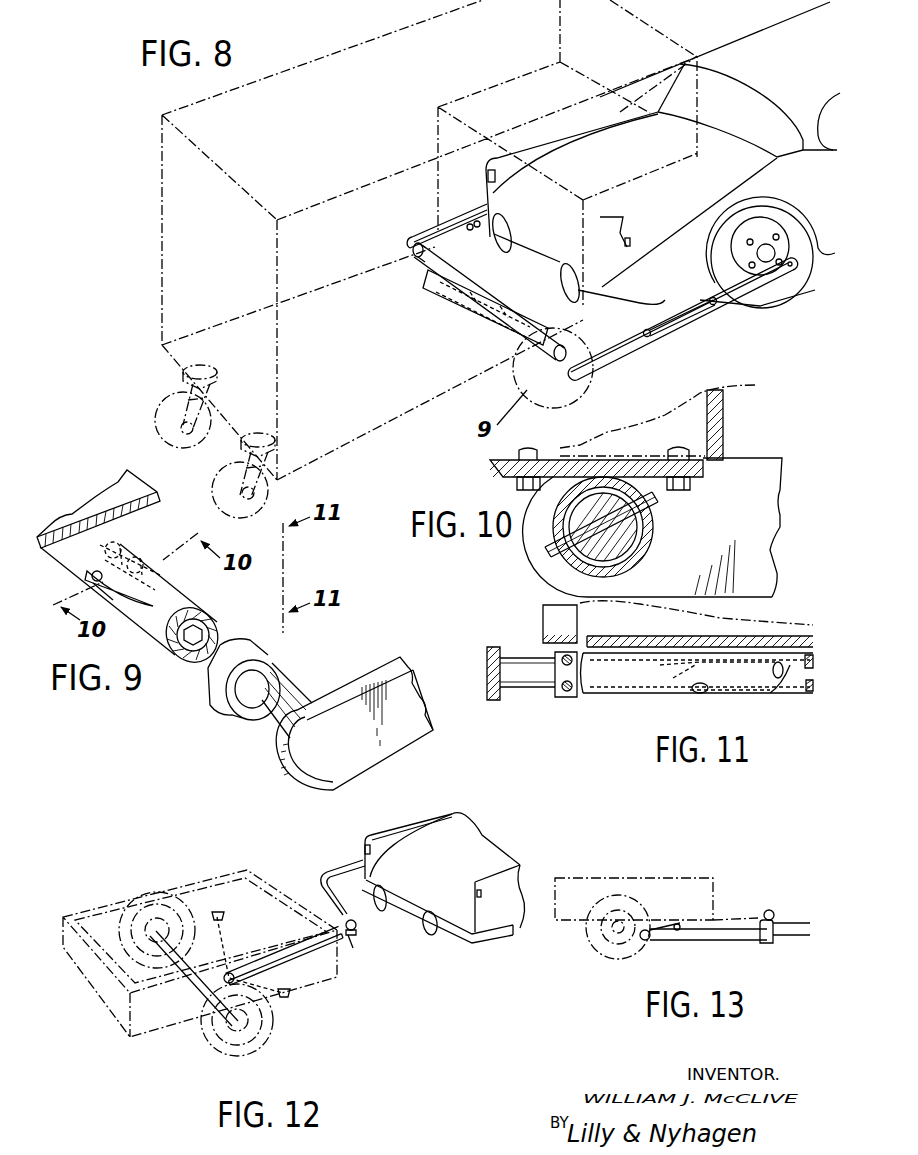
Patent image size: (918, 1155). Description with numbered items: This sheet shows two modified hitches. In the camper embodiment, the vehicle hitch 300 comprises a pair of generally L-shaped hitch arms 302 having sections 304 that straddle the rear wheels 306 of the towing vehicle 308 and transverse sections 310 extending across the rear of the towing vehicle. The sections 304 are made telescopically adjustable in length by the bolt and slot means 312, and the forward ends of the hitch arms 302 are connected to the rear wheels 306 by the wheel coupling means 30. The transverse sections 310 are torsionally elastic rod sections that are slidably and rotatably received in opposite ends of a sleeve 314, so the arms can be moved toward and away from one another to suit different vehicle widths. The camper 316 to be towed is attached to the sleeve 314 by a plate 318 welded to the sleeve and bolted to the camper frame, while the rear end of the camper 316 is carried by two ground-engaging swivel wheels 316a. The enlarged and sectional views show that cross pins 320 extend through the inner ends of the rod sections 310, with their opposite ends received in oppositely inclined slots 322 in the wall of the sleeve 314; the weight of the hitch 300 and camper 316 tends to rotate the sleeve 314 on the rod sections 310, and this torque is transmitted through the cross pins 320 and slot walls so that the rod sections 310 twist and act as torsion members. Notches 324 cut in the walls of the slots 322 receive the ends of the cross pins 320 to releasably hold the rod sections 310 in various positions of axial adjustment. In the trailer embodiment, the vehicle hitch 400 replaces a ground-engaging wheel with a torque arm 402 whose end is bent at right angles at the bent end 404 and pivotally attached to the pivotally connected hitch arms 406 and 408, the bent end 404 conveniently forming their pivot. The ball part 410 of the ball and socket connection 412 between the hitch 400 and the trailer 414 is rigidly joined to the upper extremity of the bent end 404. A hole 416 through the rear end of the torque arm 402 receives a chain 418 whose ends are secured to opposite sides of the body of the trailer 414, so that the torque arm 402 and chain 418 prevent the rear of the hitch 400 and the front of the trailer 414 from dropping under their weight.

In FIG. 8, the wheel coupling means 30 is at (786, 238).
In FIG. 8, the vehicle hitch 300 is at (604, 368).
In FIG. 9, the vehicle hitch 300 is at (262, 757).
In FIG. 8, the hitch arms 302 is at (400, 247).
In FIG. 9, the hitch arms 302 is at (300, 790).
In FIG. 10, the hitch arms 302 is at (540, 556).
In FIG. 11, the hitch arms 302 is at (486, 649).
In FIG. 8, the hitch arm sections 304 is at (437, 232).
In FIG. 9, the hitch arm sections 304 is at (367, 767).
In FIG. 10, the hitch arm sections 304 is at (765, 458).
In FIG. 11, the hitch arm sections 304 is at (487, 674).
In FIG. 8, the rear wheels 306 is at (778, 303).
In FIG. 8, the towing vehicle 308 is at (760, 42).
In FIG. 8, the rod sections 310 is at (413, 255).
In FIG. 9, the rod sections 310 is at (183, 660).
In FIG. 10, the rod sections 310 is at (567, 560).
In FIG. 11, the rod sections 310 is at (531, 690).
In FIG. 8, the bolt and slot means 312 is at (469, 221).
In FIG. 8, the sleeve 314 is at (520, 348).
In FIG. 9, the sleeve 314 is at (185, 590).
In FIG. 10, the sleeve 314 is at (637, 572).
In FIG. 11, the sleeve 314 is at (620, 689).
In FIG. 8, the camper 316 is at (307, 62).
In FIG. 10, the camper 316 is at (753, 390).
In FIG. 11, the camper 316 is at (713, 618).
In FIG. 8, the swivel wheels 316a is at (188, 478).
In FIG. 8, the plate 318 is at (449, 298).
In FIG. 9, the plate 318 is at (127, 470).
In FIG. 10, the plate 318 is at (702, 476).
In FIG. 11, the plate 318 is at (657, 641).
In FIG. 9, the cross pins 320 is at (87, 577).
In FIG. 10, the cross pins 320 is at (657, 510).
In FIG. 11, the cross pins 320 is at (780, 692).
In FIG. 9, the slots 322 is at (165, 580).
In FIG. 11, the slots 322 is at (673, 679).
In FIG. 9, the notches 324 is at (113, 547).
In FIG. 11, the notches 324 is at (697, 688).
In FIG. 12, the vehicle hitch 400 is at (440, 962).
In FIG. 13, the vehicle hitch 400 is at (787, 936).
In FIG. 12, the torque arm 402 is at (307, 953).
In FIG. 13, the torque arm 402 is at (705, 941).
In FIG. 12, the bent end 404 is at (357, 937).
In FIG. 13, the bent end 404 is at (768, 945).
In FIG. 12, the hitch arm 406 is at (330, 873).
In FIG. 12, the hitch arm 408 is at (476, 948).
In FIG. 13, the hitch arm 408 is at (788, 924).
In FIG. 12, the ball part 410 is at (357, 920).
In FIG. 13, the ball part 410 is at (775, 912).
In FIG. 12, the ball and socket connection 412 is at (340, 915).
In FIG. 13, the ball and socket connection 412 is at (760, 908).
In FIG. 12, the trailer 414 is at (98, 917).
In FIG. 13, the trailer 414 is at (580, 880).
In FIG. 12, the hole 416 is at (205, 990).
In FIG. 13, the hole 416 is at (617, 958).
In FIG. 12, the chain 418 is at (224, 935).
In FIG. 13, the chain 418 is at (663, 943).